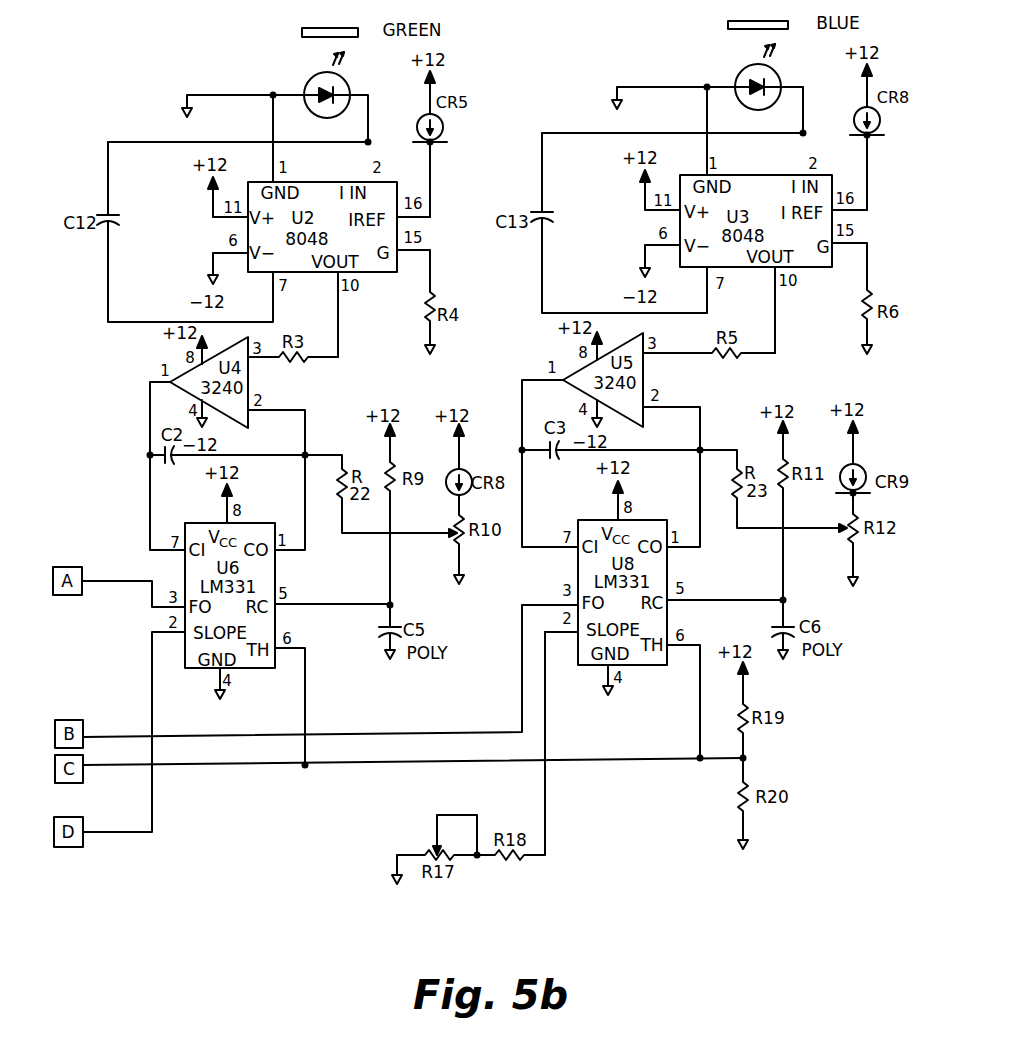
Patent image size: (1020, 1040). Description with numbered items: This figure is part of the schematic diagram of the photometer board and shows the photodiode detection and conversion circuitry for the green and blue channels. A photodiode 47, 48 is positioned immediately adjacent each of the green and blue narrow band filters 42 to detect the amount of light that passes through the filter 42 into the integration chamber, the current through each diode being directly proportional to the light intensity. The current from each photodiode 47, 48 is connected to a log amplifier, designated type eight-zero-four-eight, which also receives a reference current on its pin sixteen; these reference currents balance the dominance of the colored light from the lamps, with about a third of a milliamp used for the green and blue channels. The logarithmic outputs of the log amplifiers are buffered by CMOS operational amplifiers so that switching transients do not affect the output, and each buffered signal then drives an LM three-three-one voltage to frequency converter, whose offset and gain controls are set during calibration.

The narrow band filter 42 is at (305, 39).
The photodiode 47 is at (345, 81).
The photodiode 48 is at (776, 72).